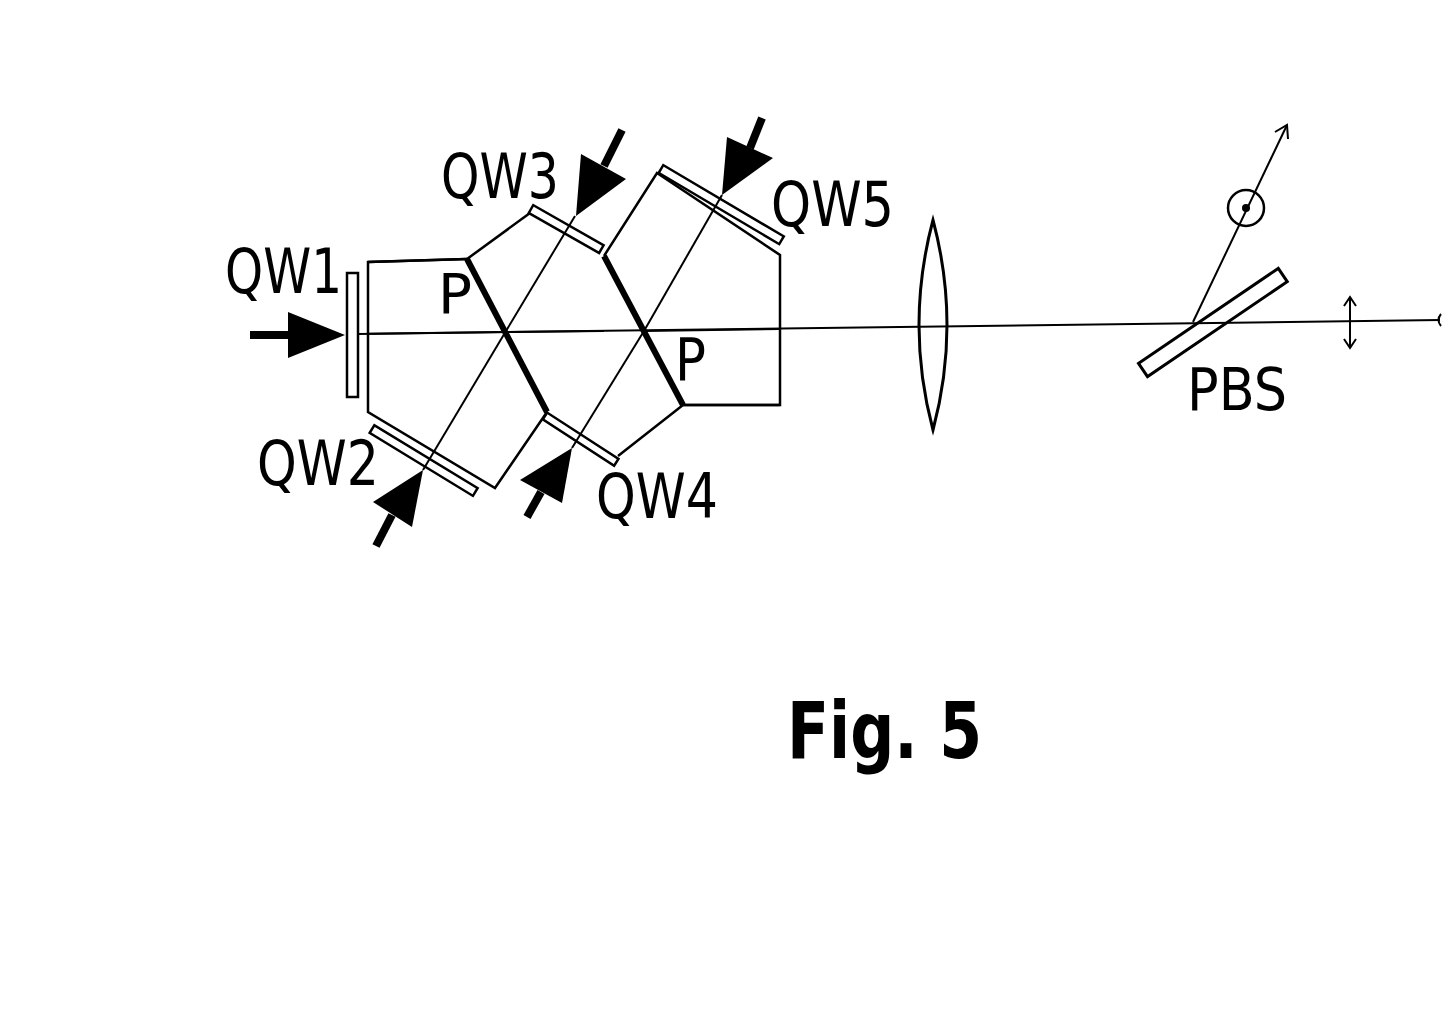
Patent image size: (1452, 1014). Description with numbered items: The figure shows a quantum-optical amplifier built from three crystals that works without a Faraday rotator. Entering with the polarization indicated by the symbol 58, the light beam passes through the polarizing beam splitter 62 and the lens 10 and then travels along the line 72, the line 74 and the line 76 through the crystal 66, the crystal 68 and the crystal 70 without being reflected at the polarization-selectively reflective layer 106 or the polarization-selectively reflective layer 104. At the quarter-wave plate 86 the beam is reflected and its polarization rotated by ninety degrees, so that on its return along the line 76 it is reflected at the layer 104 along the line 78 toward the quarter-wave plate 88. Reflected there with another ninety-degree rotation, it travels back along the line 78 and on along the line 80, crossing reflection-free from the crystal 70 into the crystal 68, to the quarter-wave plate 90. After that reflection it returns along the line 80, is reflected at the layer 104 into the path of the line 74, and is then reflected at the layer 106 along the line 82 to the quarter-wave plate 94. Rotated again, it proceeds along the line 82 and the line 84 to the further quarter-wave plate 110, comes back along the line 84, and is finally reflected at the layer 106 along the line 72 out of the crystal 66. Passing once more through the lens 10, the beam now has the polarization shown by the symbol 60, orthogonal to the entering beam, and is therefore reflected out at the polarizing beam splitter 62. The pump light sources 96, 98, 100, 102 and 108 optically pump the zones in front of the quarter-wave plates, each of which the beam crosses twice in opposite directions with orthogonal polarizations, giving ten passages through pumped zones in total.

The lens 10 is at (934, 275).
The polarization symbol 58 is at (1353, 298).
The polarization symbol 60 is at (1267, 208).
The polarizing beam splitter 62 is at (1155, 363).
The crystal 66 is at (741, 379).
The crystal 68 is at (651, 414).
The crystal 70 is at (503, 441).
The line 72 is at (672, 329).
The line 74 is at (540, 332).
The line 76 is at (387, 302).
The line 78 is at (451, 418).
The line 80 is at (515, 323).
The line 82 is at (594, 404).
The line 84 is at (660, 283).
The quarter-wave plate 86 is at (350, 378).
The quarter-wave plate 88 is at (453, 481).
The quarter-wave plate 90 is at (522, 212).
The quarter-wave plate 94 is at (601, 470).
The pump light source 96 is at (260, 337).
The pump light source 98 is at (622, 130).
The pump light source 100 is at (762, 118).
The pump light source 102 is at (527, 517).
The polarization-selectively reflecting layer 104 is at (467, 259).
The polarization-selectively reflecting layer 106 is at (684, 407).
The pump light source 108 is at (376, 546).
The quarter-wave plate 110 is at (688, 167).